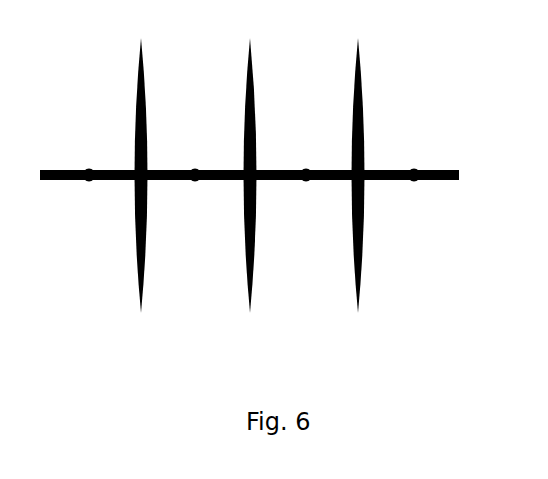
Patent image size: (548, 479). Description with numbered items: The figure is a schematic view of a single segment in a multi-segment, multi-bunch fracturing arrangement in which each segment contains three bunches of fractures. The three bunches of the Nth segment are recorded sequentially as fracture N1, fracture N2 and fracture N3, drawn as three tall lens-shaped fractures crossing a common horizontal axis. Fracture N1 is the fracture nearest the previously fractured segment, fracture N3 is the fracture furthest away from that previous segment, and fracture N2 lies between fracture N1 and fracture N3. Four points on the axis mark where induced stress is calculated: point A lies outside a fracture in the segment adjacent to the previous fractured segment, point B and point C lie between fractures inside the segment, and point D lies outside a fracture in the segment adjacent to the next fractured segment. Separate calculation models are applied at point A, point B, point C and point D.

The point A is at (85, 201).
The point B is at (194, 201).
The point C is at (306, 201).
The point D is at (412, 201).
The fracture N1 is at (141, 200).
The fracture N2 is at (251, 200).
The fracture N3 is at (360, 200).